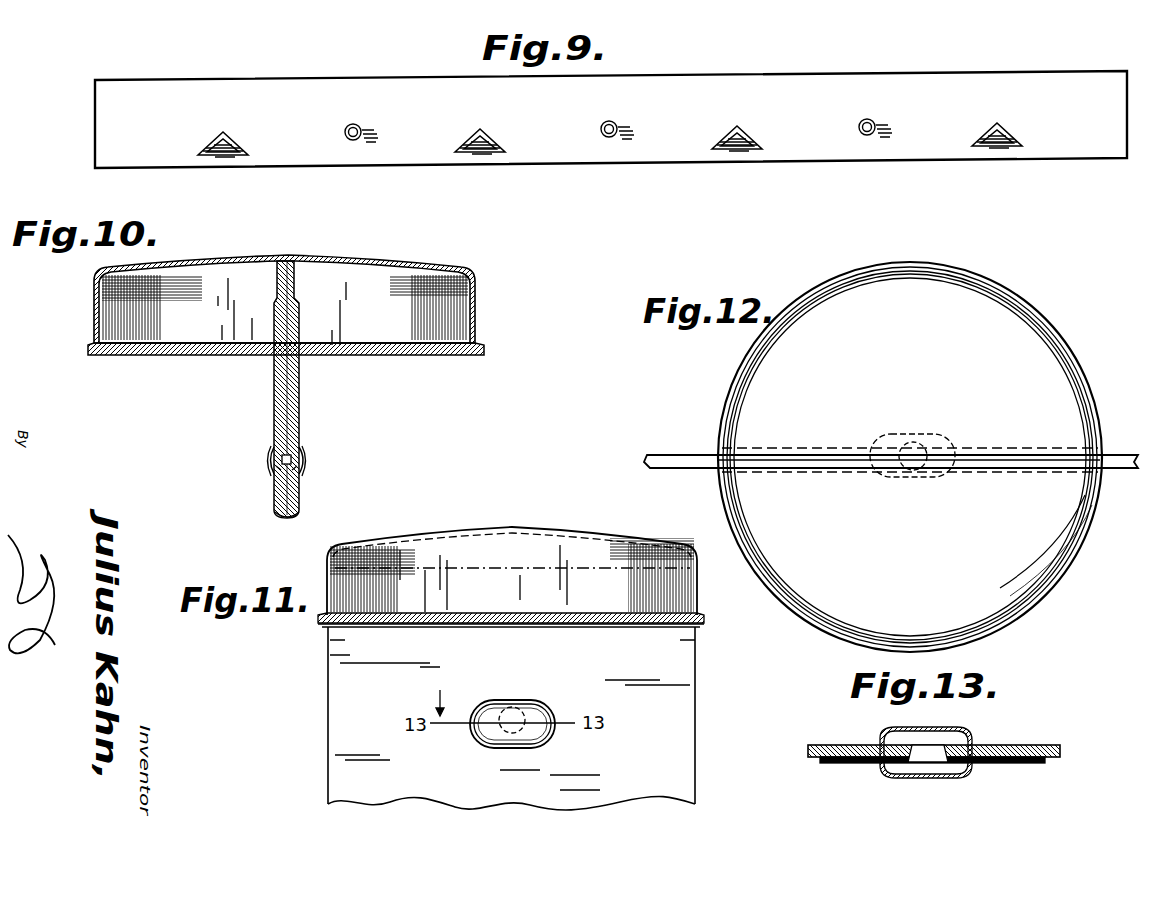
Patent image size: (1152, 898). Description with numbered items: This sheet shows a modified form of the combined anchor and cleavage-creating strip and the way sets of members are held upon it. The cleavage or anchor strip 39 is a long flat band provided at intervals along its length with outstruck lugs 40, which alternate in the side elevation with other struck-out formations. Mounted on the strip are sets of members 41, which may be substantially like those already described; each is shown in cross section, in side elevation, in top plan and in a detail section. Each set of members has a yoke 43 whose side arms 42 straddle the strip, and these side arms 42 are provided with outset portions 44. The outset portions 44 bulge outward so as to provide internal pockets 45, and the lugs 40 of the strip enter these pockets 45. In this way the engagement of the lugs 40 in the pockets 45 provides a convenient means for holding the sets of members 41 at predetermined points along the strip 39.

In FIG. 9, the cleavage or anchor strip 39 is at (698, 152).
In FIG. 13, the cleavage or anchor strip 39 is at (810, 750).
In FIG. 9, the outstruck lugs 40 is at (356, 124).
In FIG. 10, the outstruck lugs 40 is at (302, 463).
In FIG. 11, the outstruck lugs 40 is at (515, 710).
In FIG. 12, the outstruck lugs 40 is at (918, 440).
In FIG. 13, the outstruck lugs 40 is at (927, 744).
In FIG. 10, the sets of members 41 is at (203, 262).
In FIG. 11, the sets of members 41 is at (490, 538).
In FIG. 12, the sets of members 41 is at (910, 457).
In FIG. 10, the side arms 42 is at (274, 380).
In FIG. 11, the side arms 42 is at (340, 684).
In FIG. 13, the side arms 42 is at (992, 746).
In FIG. 10, the yokes 43 is at (284, 516).
In FIG. 10, the outset portions 44 is at (275, 453).
In FIG. 11, the outset portions 44 is at (487, 738).
In FIG. 12, the outset portions 44 is at (884, 442).
In FIG. 13, the outset portions 44 is at (903, 730).
In FIG. 10, the internal pockets 45 is at (277, 467).